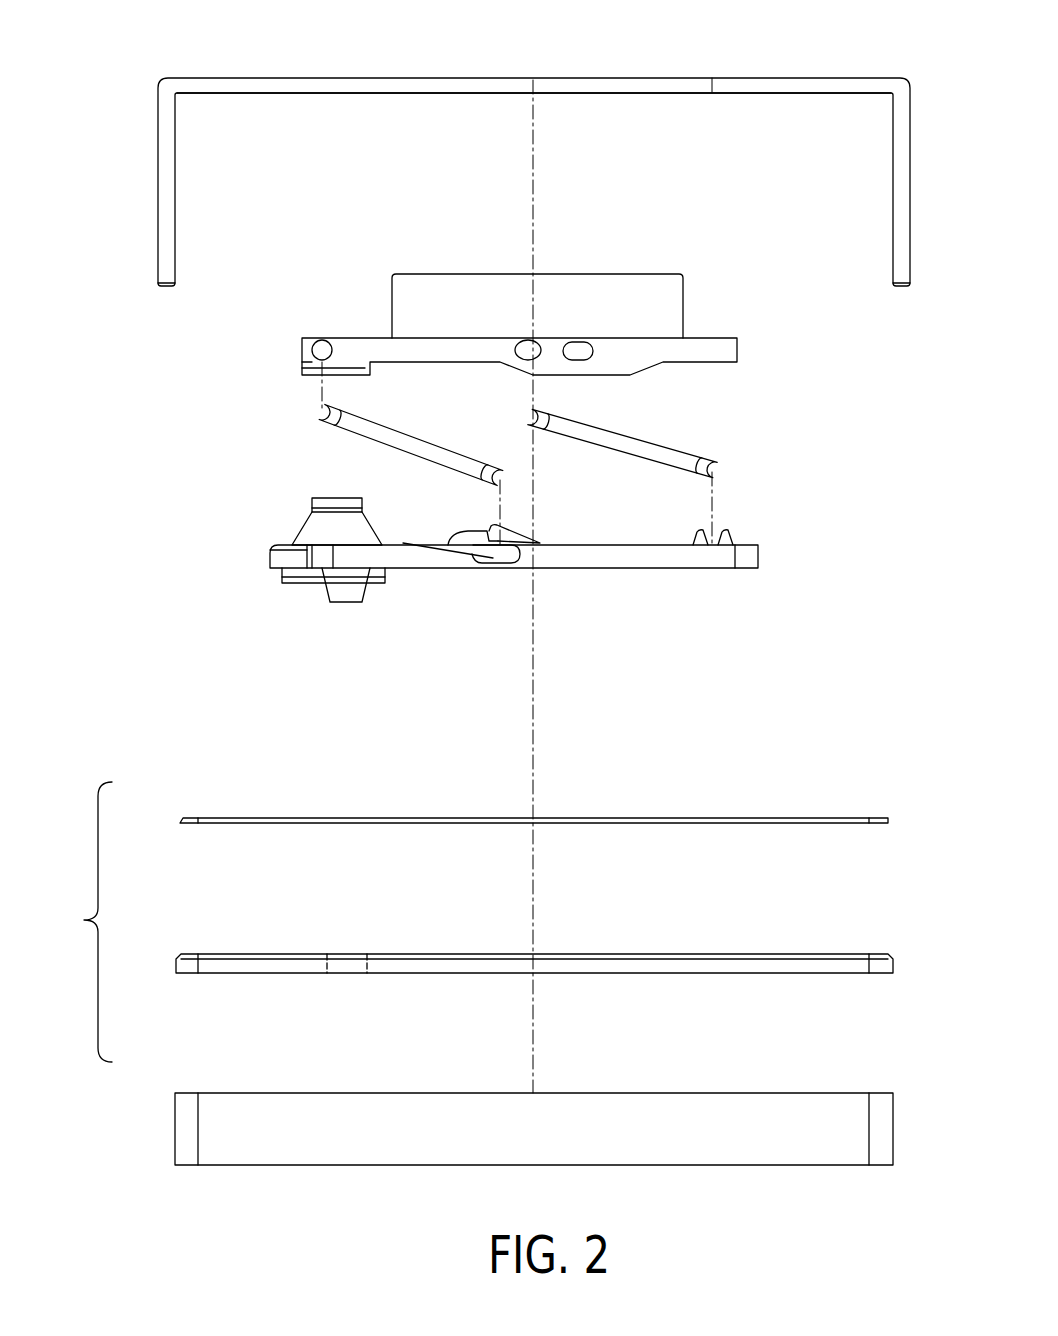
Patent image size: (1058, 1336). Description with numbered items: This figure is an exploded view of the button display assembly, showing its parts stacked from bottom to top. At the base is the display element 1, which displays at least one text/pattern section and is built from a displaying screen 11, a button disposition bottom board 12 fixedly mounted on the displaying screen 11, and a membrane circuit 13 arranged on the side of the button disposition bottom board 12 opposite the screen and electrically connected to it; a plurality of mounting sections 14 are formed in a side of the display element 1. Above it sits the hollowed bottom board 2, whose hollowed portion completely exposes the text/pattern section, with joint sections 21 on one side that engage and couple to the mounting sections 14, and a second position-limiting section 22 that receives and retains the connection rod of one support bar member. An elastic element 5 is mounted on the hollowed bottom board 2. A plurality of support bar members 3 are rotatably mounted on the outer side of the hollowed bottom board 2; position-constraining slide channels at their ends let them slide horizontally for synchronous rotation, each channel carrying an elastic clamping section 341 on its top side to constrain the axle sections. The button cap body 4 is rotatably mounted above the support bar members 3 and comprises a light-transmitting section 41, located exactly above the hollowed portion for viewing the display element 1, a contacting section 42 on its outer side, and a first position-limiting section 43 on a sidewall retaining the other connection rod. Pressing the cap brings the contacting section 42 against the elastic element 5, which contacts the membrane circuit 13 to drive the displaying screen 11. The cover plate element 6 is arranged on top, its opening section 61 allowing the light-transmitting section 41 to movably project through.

The display element 1 is at (475, 964).
The displaying screen 11 is at (197, 1093).
The button disposition bottom board 12 is at (197, 954).
The membrane circuit 13 is at (197, 817).
The mounting sections 14 is at (370, 962).
The hollowed bottom board 2 is at (549, 571).
The joint sections 21 is at (345, 605).
The second position-limiting section 22 is at (730, 533).
The support bar members 3 is at (705, 448).
The elastic clamping section 341 is at (448, 570).
The button cap body 4 is at (538, 291).
The light-transmitting section 41 is at (620, 273).
The contacting section 42 is at (302, 342).
The first position-limiting section 43 is at (322, 345).
The elastic element 5 is at (302, 527).
The cover plate element 6 is at (208, 78).
The opening section 61 is at (383, 92).